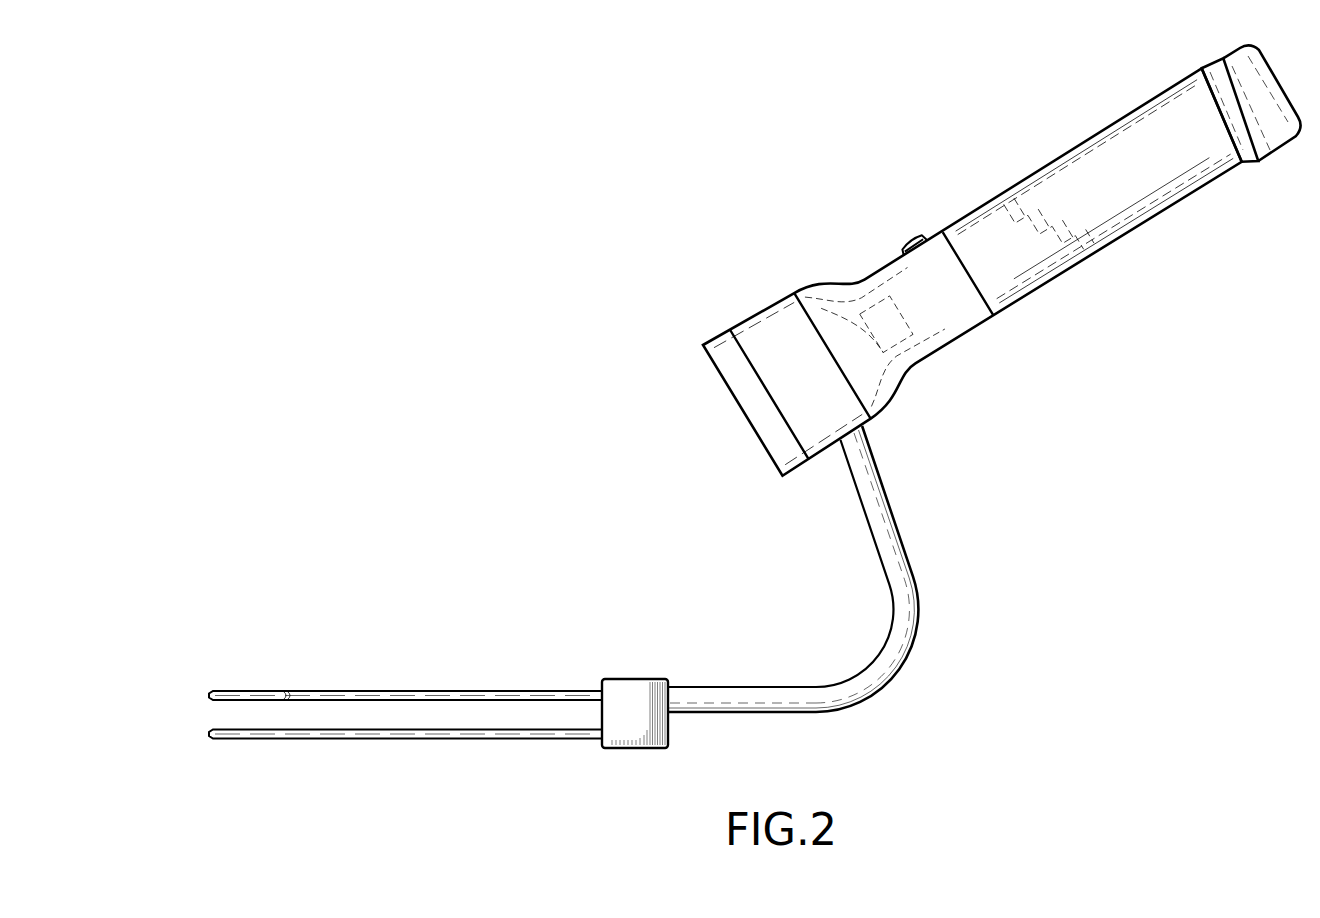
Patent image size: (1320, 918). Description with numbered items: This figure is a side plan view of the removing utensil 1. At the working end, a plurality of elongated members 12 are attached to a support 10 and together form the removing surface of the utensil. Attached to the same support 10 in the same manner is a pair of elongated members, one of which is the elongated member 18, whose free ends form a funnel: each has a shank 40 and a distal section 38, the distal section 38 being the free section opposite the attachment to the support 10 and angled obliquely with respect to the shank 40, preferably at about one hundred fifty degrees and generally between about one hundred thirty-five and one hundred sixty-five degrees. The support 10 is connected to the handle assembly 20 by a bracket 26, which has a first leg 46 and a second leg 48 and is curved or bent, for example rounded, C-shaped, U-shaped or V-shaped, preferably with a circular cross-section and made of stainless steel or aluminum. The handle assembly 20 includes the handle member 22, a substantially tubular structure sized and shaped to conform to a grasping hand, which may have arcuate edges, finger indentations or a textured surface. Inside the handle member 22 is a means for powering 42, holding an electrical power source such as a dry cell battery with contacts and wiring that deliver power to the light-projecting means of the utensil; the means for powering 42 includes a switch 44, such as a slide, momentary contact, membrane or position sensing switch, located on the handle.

The fluid delivery system 1 is at (343, 214).
The support 10 is at (635, 697).
The elongated members 12 is at (432, 738).
The elongated member having distal section that obliquely faces away 18 is at (523, 692).
The handle assembly 20 is at (1176, 309).
The handle member 22 is at (1080, 140).
The bracket 26 is at (903, 638).
The distal section 38 is at (235, 668).
The shank 40 is at (387, 690).
The means for powering 42 is at (1182, 180).
The switch 44 is at (908, 236).
The first leg 46 is at (778, 703).
The second leg 48 is at (885, 520).